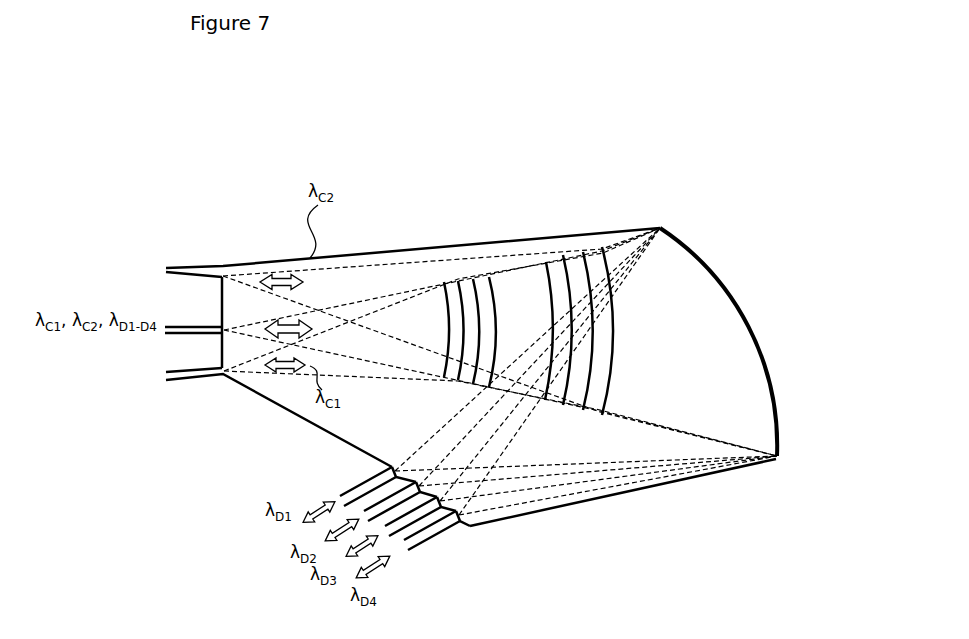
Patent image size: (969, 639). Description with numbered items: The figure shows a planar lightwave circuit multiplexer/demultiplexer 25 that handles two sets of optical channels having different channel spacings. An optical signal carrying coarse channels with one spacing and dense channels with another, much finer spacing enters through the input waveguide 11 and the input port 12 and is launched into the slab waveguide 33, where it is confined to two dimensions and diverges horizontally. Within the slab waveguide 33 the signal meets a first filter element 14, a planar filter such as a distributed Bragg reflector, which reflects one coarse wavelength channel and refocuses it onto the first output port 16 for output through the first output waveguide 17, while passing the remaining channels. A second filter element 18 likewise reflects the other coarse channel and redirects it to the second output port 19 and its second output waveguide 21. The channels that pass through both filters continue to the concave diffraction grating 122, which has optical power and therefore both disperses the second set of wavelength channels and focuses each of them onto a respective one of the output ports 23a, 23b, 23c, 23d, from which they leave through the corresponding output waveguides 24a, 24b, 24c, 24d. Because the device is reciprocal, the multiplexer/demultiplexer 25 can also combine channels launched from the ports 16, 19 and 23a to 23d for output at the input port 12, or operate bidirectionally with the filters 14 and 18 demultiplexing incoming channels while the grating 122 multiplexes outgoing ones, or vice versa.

The input waveguide 11 is at (168, 325).
The input port 12 is at (229, 328).
The first filter element 14 is at (479, 290).
The first output port 16 is at (243, 384).
The first output waveguide 17 is at (177, 378).
The second filter element 18 is at (587, 283).
The second output port 19 is at (250, 264).
The second output waveguide 21 is at (167, 267).
The output port 23a is at (399, 469).
The output port 23b is at (419, 485).
The output port 23c is at (450, 498).
The output port 23d is at (459, 512).
The output waveguide 24a is at (388, 476).
The output waveguide 24b is at (364, 512).
The output waveguide 24c is at (388, 532).
The output waveguide 24d is at (405, 541).
The multiplexer/demultiplexer 25 is at (395, 172).
The slab waveguide 33 is at (653, 342).
The concave diffraction grating 122 is at (776, 392).